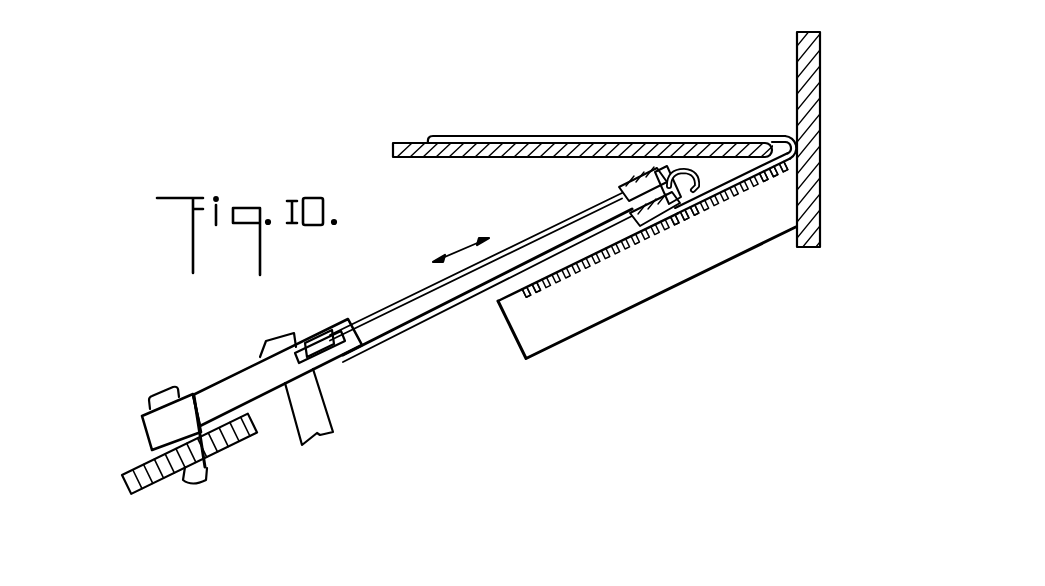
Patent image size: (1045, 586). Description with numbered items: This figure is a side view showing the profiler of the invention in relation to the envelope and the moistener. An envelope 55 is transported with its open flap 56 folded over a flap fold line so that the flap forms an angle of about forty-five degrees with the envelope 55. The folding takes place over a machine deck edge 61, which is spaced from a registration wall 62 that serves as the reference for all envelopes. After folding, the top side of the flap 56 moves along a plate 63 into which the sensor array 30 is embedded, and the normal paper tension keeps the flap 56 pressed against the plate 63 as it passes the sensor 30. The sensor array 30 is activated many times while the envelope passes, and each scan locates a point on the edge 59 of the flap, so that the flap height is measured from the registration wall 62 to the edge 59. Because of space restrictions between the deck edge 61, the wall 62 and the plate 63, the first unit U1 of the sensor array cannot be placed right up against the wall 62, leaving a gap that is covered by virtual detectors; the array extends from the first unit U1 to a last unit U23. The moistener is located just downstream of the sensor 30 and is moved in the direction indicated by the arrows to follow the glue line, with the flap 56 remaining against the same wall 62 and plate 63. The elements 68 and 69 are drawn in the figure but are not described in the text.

The sensor array 30 is at (710, 215).
The envelope 55 is at (512, 142).
The flap 56 is at (728, 177).
The edge of the envelope flap 59 is at (683, 220).
The machine deck edge 61 is at (773, 138).
The registration wall 62 is at (815, 77).
The plate 63 is at (582, 330).
The clamp 68 is at (597, 184).
The hook 69 is at (689, 172).
The first unit of the sensor array U1 is at (777, 175).
The twenty-third unit position U23 is at (526, 302).